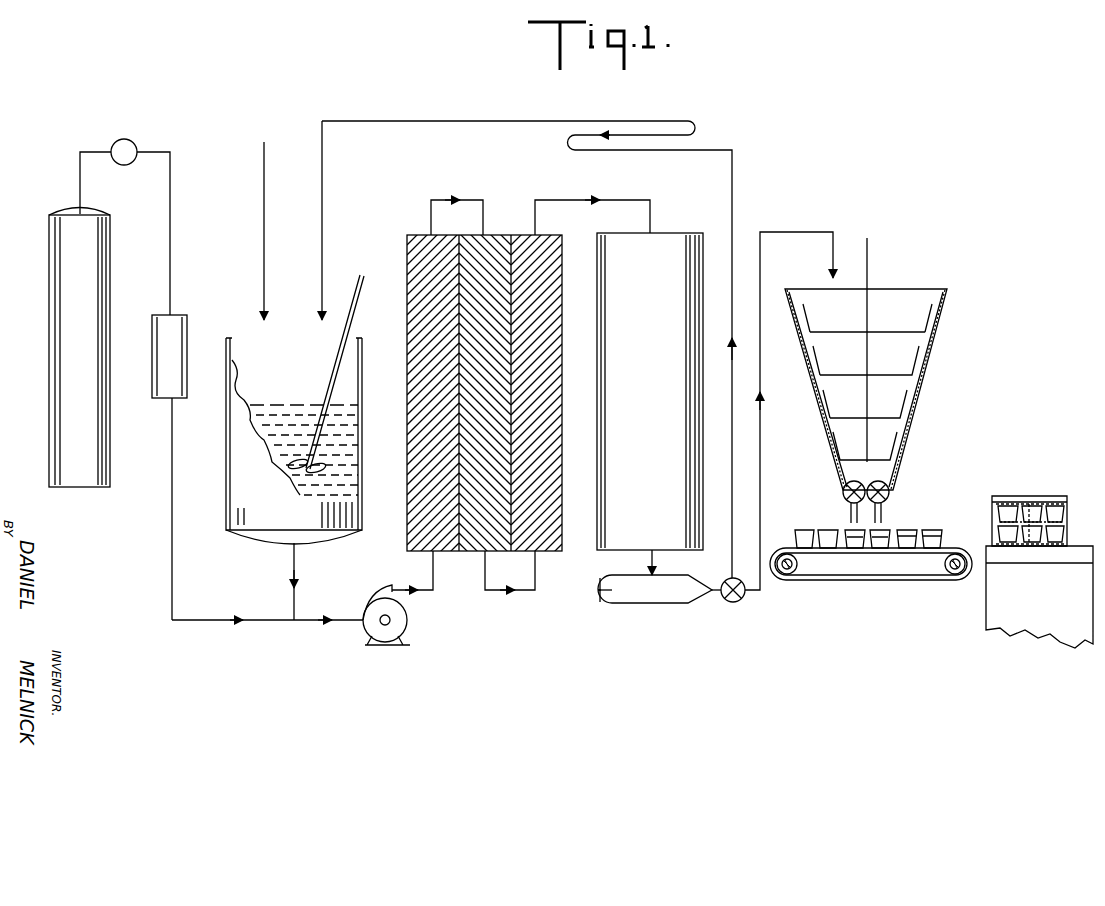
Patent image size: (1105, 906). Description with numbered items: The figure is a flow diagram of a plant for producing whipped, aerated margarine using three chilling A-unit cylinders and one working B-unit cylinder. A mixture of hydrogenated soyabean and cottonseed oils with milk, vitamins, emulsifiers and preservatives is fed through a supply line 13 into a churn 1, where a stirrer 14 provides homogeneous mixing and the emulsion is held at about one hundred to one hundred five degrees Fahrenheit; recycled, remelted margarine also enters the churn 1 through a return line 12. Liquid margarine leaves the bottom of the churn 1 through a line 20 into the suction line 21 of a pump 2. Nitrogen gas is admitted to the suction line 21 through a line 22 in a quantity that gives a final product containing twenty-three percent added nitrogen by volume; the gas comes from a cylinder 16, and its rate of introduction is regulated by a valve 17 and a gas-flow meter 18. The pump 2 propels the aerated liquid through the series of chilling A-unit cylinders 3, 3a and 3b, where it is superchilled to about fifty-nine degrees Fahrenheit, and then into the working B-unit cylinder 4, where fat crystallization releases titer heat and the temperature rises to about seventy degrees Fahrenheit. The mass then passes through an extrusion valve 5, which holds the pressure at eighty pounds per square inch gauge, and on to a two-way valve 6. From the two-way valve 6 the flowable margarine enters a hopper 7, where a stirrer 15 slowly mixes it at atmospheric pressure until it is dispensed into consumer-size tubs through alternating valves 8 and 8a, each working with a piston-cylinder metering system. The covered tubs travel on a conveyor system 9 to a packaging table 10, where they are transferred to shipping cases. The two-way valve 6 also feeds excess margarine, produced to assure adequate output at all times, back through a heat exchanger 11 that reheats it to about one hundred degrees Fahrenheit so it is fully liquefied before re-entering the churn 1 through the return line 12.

The churn 1 is at (237, 458).
The pump 2 is at (402, 618).
The chilling A-unit cylinder 3 is at (407, 391).
The chilling A-unit cylinder 3a is at (493, 240).
The chilling A-unit cylinder 3b is at (562, 385).
The working B-unit cylinder 4 is at (676, 242).
The extrusion valve 5 is at (640, 602).
The two-way valve 6 is at (736, 603).
The hopper 7 is at (922, 402).
The alternating valve 8 is at (843, 496).
The alternating valve 8a is at (890, 496).
The conveyor system 9 is at (864, 584).
The packaging table 10 is at (998, 613).
The heat exchanger 11 is at (695, 128).
The return line 12 is at (322, 181).
The supply line 13 is at (264, 181).
The stirrer 14 is at (358, 310).
The stirrer 15 is at (869, 258).
The cylinder 16 is at (49, 340).
The valve 17 is at (135, 143).
The gas-flow meter 18 is at (178, 318).
The line 20 is at (296, 600).
The suction line 21 is at (313, 622).
The line 22 is at (203, 622).